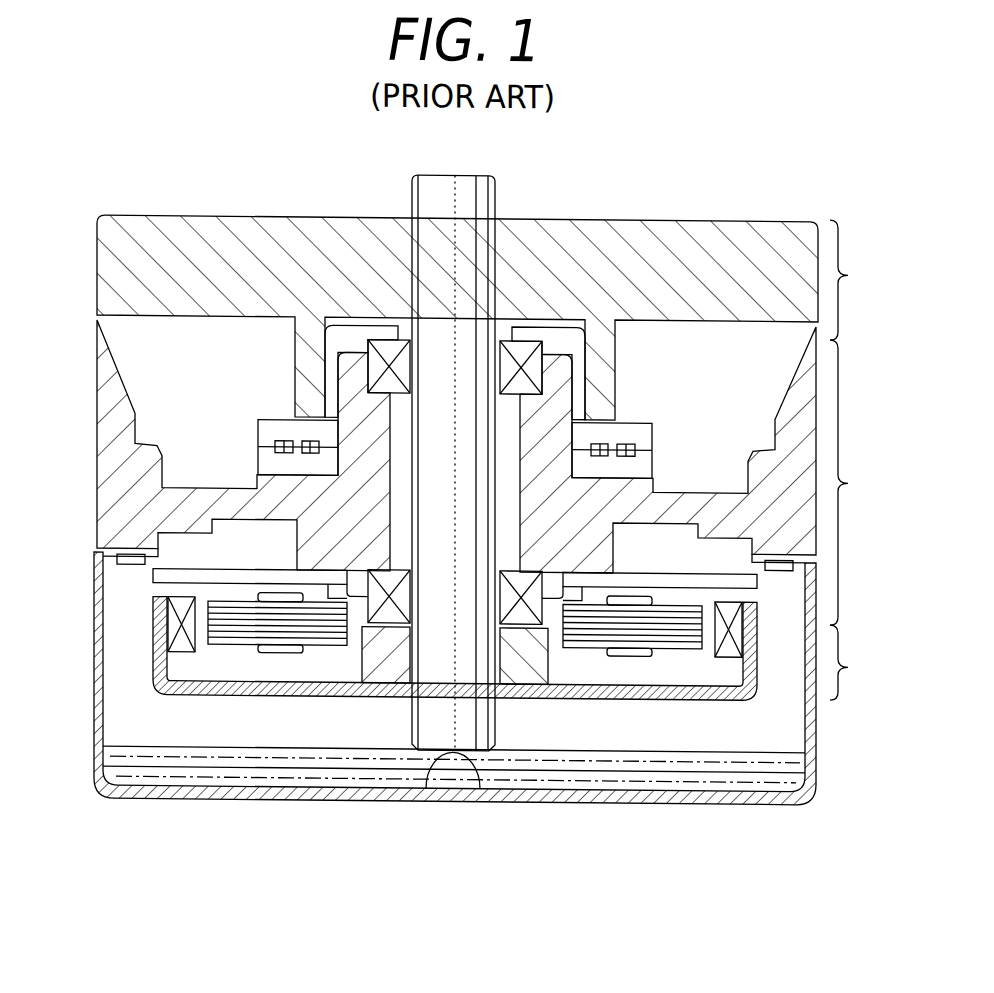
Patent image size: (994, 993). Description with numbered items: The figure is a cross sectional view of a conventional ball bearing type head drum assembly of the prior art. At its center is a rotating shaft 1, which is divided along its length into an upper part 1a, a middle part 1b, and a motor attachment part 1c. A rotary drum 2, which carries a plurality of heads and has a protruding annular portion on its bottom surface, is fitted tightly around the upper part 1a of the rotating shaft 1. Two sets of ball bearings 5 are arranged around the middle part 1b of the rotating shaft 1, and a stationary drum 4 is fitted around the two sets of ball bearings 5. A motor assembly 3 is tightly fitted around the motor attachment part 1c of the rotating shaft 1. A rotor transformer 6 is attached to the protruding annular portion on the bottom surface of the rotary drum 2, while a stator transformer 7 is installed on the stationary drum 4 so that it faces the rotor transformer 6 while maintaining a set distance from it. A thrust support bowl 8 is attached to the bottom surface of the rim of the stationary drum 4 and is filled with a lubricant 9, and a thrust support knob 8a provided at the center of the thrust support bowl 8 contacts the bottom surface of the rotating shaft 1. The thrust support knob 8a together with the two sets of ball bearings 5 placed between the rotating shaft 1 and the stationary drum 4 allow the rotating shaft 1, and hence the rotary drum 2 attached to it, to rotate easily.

The rotating shaft 1 is at (497, 198).
The upper part 1a is at (866, 280).
The middle part 1b is at (866, 483).
The motor attachment part 1c is at (865, 663).
The rotary drum 2 is at (98, 285).
The motor assembly 3 is at (146, 633).
The stationary drum 4 is at (108, 480).
The ball bearings 5 is at (382, 361).
The rotor transformer 6 is at (272, 430).
The stator transformer 7 is at (272, 460).
The thrust support bowl 8 is at (105, 788).
The thrust support knob 8a is at (447, 770).
The lubricant 9 is at (587, 769).